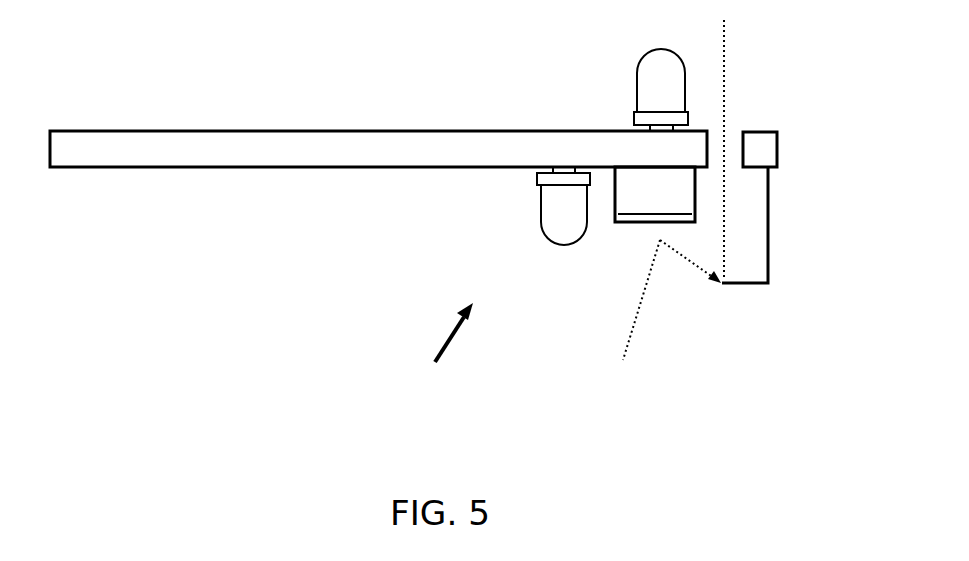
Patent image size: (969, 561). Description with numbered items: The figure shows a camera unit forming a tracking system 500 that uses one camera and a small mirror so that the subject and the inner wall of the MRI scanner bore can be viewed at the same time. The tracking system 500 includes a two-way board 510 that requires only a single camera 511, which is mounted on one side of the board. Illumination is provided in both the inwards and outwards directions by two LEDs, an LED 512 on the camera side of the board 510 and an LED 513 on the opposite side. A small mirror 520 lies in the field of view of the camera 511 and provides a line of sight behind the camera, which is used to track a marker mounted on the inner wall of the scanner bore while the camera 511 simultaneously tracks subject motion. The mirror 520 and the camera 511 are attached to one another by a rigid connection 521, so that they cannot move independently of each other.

The tracking system 500 is at (435, 361).
The two-way board 510 is at (146, 145).
The camera 511 is at (632, 202).
The LED 512 is at (549, 209).
The LED 513 is at (647, 73).
The mirror 520 is at (720, 288).
The rigid connection 521 is at (768, 150).